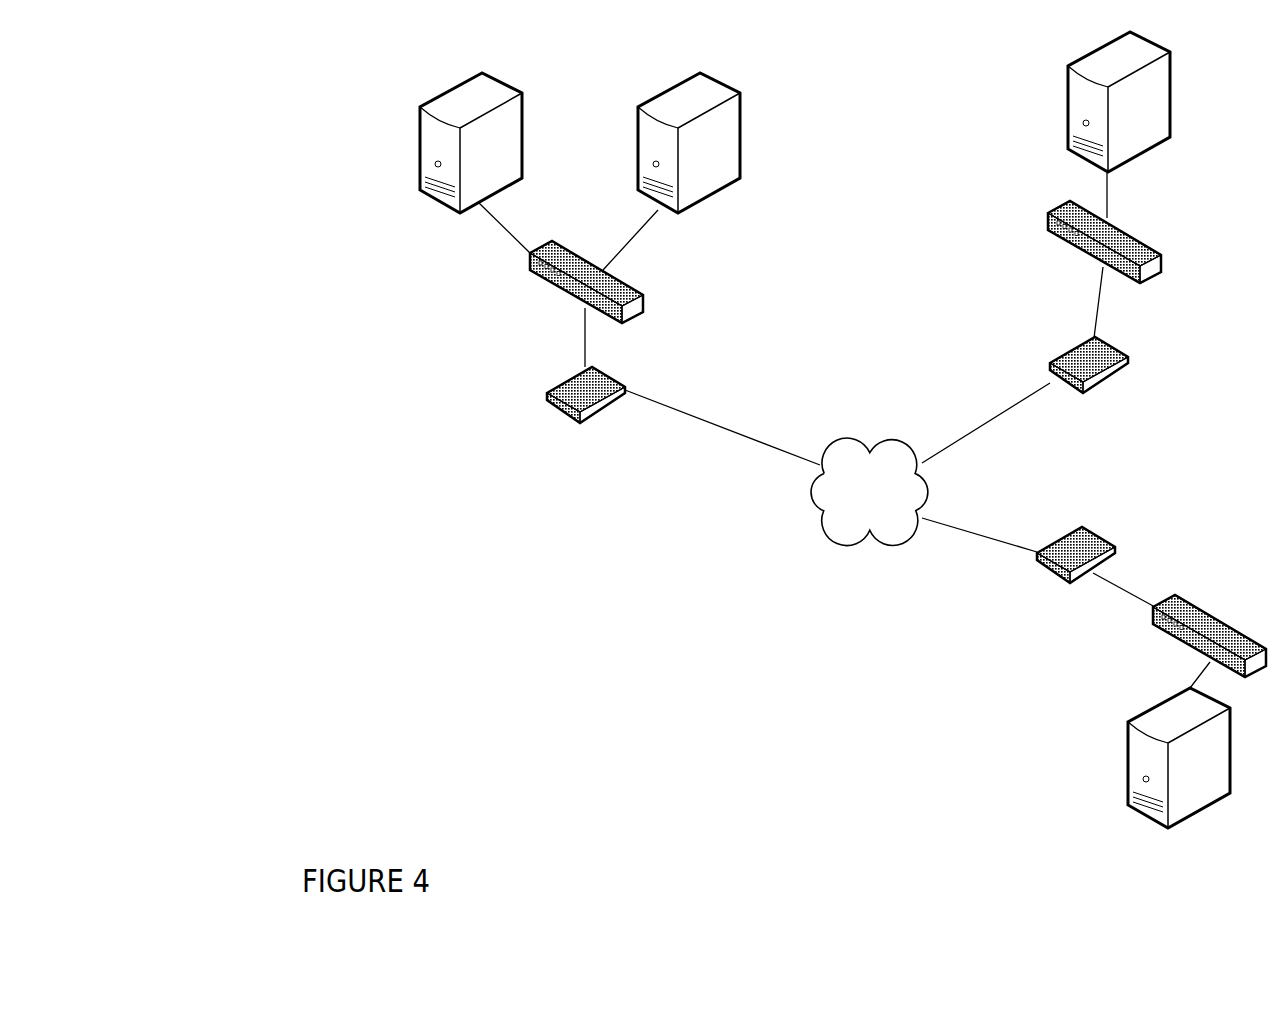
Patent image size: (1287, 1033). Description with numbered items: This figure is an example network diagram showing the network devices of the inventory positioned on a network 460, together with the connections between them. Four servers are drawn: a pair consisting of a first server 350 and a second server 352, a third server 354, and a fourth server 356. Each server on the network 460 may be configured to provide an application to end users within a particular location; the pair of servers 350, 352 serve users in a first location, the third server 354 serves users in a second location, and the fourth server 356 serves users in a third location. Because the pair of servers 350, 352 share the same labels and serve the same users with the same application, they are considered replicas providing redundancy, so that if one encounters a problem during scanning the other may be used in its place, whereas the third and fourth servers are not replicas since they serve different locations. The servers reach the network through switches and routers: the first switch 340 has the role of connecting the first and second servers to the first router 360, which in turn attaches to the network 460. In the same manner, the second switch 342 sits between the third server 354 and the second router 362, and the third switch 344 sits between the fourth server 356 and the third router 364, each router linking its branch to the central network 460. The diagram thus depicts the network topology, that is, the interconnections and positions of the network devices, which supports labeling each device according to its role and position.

The Server 1 350 is at (418, 183).
The Server 2 352 is at (645, 96).
The Server 3 354 is at (1072, 166).
The Server 4 356 is at (1127, 723).
The Switch 1 340 is at (530, 275).
The Switch 2 342 is at (1077, 252).
The Switch 3 344 is at (1165, 640).
The Router 1 360 is at (547, 393).
The Router 2 362 is at (1048, 365).
The Router 3 364 is at (1037, 556).
The network 460 is at (869, 492).